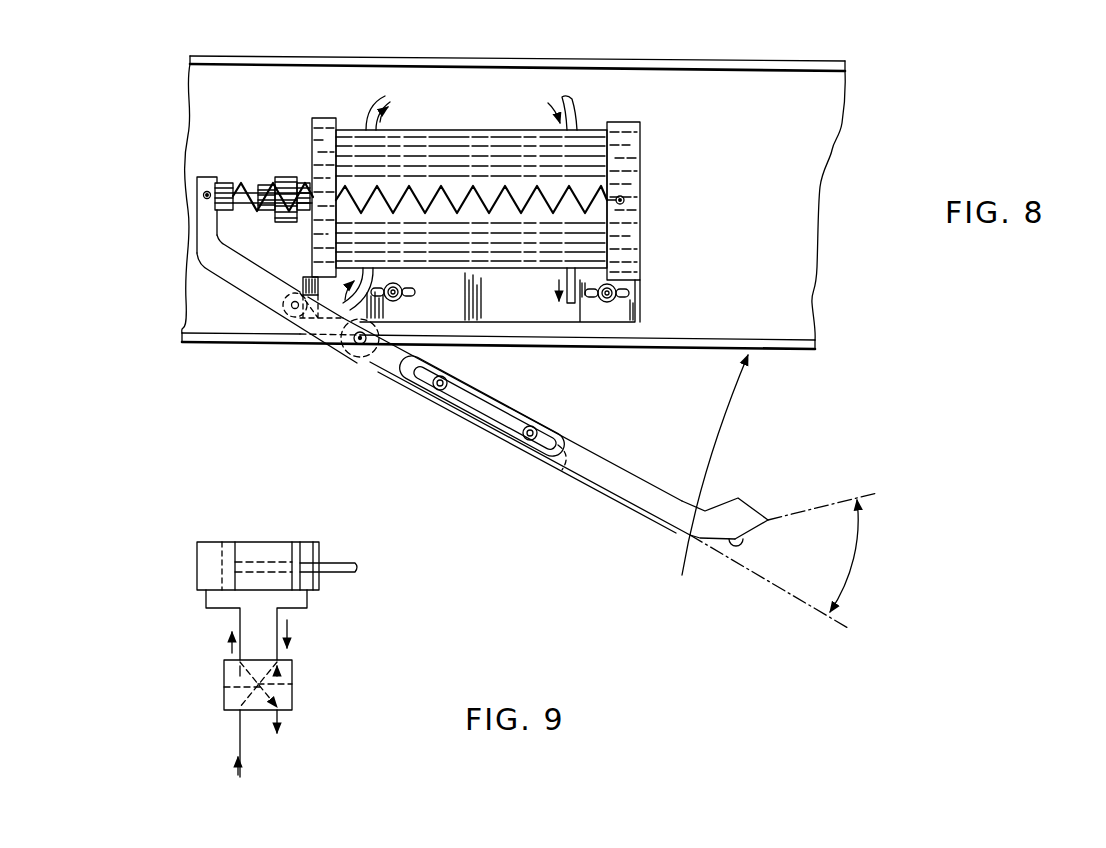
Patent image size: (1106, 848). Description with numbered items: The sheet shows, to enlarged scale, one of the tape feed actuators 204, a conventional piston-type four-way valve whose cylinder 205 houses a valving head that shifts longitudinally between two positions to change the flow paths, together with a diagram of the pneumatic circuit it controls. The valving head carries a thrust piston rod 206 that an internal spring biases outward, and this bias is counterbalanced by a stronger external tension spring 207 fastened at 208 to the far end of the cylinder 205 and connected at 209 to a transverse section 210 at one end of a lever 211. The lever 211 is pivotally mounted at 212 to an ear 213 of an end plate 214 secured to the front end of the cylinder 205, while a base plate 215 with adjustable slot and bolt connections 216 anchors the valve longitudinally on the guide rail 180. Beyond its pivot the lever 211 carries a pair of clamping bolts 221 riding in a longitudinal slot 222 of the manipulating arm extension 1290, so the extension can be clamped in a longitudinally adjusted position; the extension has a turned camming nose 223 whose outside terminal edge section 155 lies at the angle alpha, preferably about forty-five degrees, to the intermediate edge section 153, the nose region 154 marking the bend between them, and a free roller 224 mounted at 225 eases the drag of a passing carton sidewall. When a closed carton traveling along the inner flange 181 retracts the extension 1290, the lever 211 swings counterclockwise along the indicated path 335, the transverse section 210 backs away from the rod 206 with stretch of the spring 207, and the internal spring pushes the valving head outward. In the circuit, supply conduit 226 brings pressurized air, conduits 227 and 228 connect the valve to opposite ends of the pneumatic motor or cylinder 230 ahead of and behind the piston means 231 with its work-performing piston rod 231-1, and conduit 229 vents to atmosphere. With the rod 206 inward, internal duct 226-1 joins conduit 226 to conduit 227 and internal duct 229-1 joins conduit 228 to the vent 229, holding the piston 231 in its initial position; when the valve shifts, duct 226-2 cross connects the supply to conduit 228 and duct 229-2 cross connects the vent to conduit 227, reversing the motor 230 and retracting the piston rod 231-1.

In FIG. 8, the guide rail 180 is at (838, 157).
In FIG. 8, the inner flange 181 is at (802, 351).
In FIG. 8, the cylinder 205 is at (433, 128).
In FIG. 9, the cylinder 205 is at (197, 541).
In FIG. 8, the thrust piston rod 206 is at (248, 190).
In FIG. 8, the tension spring 207 is at (440, 193).
In FIG. 8, the spring fastening point 208 is at (625, 200).
In FIG. 8, the spring connection point 209 is at (203, 196).
In FIG. 8, the transverse section 210 is at (219, 236).
In FIG. 8, the lever 211 is at (232, 288).
In FIG. 8, the pivot 212 is at (293, 309).
In FIG. 8, the ear 213 is at (305, 293).
In FIG. 8, the end plate 214 is at (318, 117).
In FIG. 8, the base plate 215 is at (645, 298).
In FIG. 8, the slot and bolt connections 216 is at (401, 298).
In FIG. 8, the clamping bolts 221 is at (458, 376).
In FIG. 8, the longitudinal slot 222 is at (482, 410).
In FIG. 8, the camming nose 223 is at (727, 502).
In FIG. 8, the free roller 224 is at (373, 360).
In FIG. 8, the roller pivot 225 is at (350, 351).
In FIG. 8, the supply conduit 226 is at (370, 278).
In FIG. 9, the supply conduit 226 is at (237, 736).
In FIG. 8, the conduit 227 is at (366, 116).
In FIG. 9, the conduit 227 is at (237, 622).
In FIG. 8, the conduit 228 is at (580, 112).
In FIG. 9, the conduit 228 is at (282, 617).
In FIG. 8, the venting conduit 229 is at (556, 283).
In FIG. 9, the venting conduit 229 is at (284, 718).
In FIG. 8, the tape feed actuator 204 is at (648, 164).
In FIG. 9, the tape feed actuator 204 is at (300, 659).
In FIG. 8, the intermediate edge section 153 is at (603, 497).
In FIG. 8, the lever bend 154 is at (690, 537).
In FIG. 8, the outside terminal edge section 155 is at (753, 518).
In FIG. 8, the arc of motion 335 is at (737, 435).
In FIG. 8, the manipulating arm extension 1290 is at (622, 463).
In FIG. 9, the pneumatic motor or cylinder 230 is at (322, 539).
In FIG. 9, the piston means 231 is at (295, 550).
In FIG. 9, the piston rod 231-1 is at (360, 567).
In FIG. 9, the internal duct 226-1 is at (228, 701).
In FIG. 9, the internal duct 226-2 is at (292, 684).
In FIG. 9, the internal duct 229-1 is at (286, 701).
In FIG. 9, the internal duct 229-2 is at (224, 687).